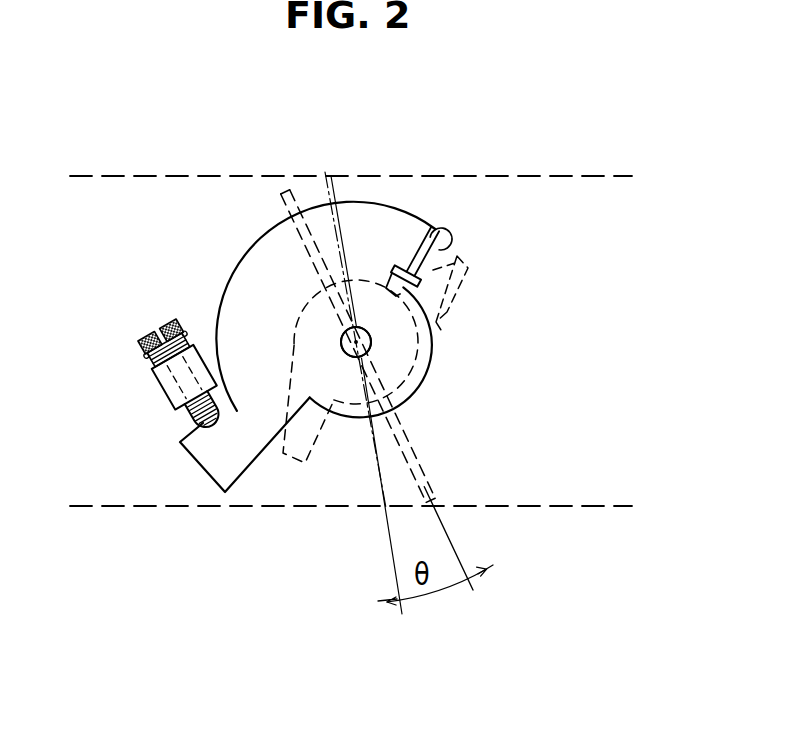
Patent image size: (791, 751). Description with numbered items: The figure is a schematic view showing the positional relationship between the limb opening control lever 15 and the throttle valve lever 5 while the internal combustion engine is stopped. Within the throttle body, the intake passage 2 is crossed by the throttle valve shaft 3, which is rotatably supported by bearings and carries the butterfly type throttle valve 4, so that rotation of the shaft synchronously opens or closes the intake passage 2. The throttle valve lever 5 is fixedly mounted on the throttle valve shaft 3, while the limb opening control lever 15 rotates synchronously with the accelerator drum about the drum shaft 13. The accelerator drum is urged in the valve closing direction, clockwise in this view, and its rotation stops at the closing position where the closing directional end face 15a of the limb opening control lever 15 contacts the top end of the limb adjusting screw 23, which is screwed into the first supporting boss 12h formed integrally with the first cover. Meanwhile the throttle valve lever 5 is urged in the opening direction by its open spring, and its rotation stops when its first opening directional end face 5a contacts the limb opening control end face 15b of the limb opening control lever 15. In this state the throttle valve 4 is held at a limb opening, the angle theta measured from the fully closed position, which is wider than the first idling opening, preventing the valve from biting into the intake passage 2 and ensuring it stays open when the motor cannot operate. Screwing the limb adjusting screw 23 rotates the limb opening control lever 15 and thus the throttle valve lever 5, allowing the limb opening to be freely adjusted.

The intake passage 2 is at (528, 505).
The throttle valve shaft 3 is at (371, 346).
The drum shaft 13 is at (455, 340).
The throttle valve 4 is at (422, 459).
The throttle valve lever 5 is at (441, 330).
The first opening directional end face 5a is at (465, 262).
The limb opening control lever 15 is at (383, 203).
The closing directional end face 15a is at (186, 438).
The limb opening control end face 15b is at (440, 228).
The first supporting boss 12h is at (150, 386).
The limb adjusting screw 23 is at (154, 336).